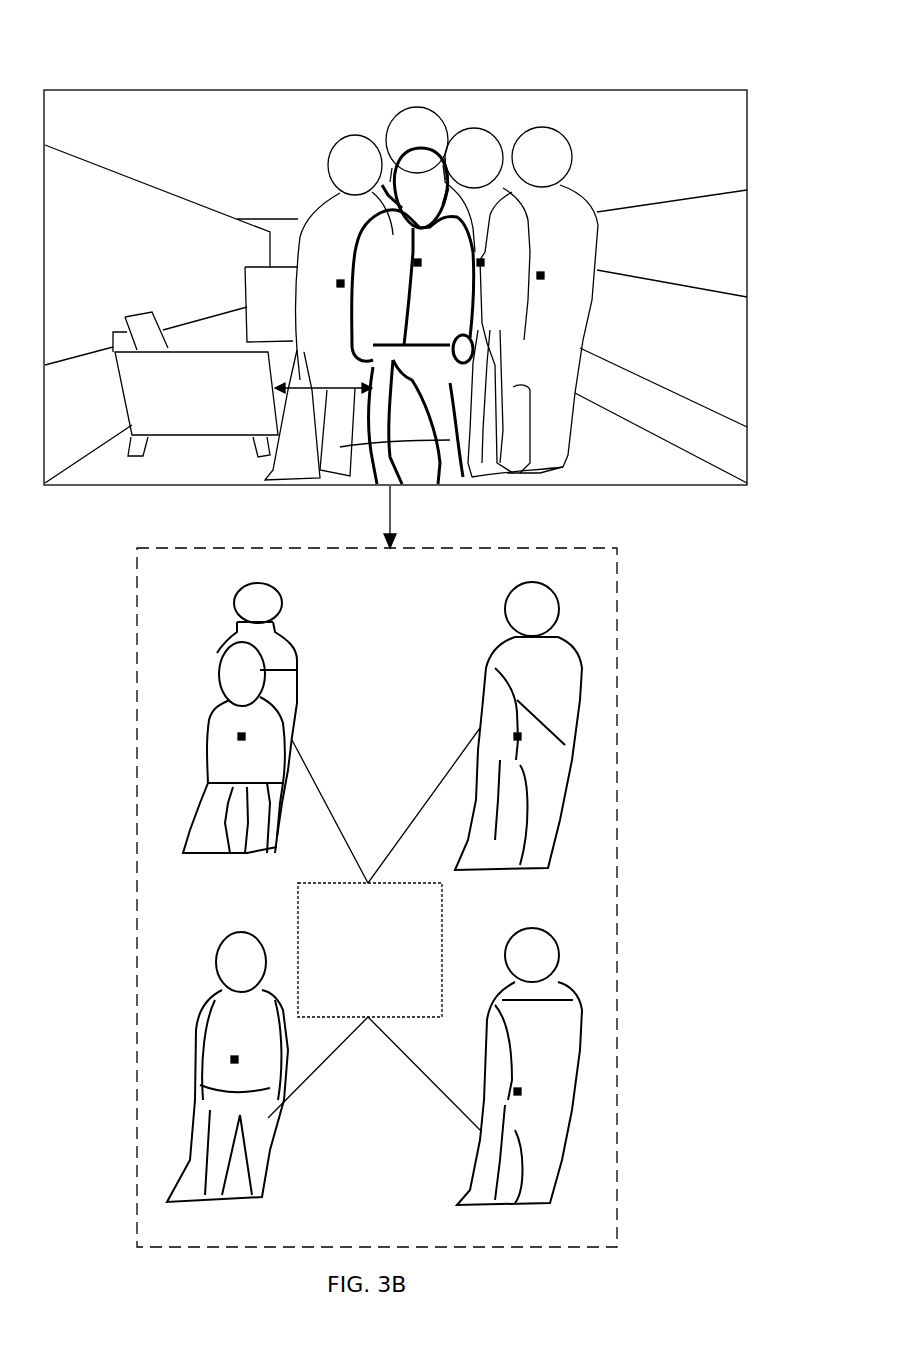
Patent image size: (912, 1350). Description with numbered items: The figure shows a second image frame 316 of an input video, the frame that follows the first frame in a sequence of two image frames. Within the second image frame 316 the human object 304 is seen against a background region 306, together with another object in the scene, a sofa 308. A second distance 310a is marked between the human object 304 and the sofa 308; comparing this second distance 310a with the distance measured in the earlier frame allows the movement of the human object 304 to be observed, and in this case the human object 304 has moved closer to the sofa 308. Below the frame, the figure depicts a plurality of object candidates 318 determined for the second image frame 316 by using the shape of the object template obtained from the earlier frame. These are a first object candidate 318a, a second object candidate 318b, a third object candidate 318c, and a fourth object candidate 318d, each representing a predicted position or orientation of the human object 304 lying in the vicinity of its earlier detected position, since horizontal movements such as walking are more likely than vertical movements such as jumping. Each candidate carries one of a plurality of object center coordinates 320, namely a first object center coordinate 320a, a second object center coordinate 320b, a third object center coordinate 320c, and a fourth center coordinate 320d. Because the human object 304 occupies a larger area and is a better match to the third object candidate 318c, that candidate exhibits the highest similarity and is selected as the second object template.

The human object 304 is at (413, 178).
The background region 306 is at (632, 113).
The sofa 308 is at (165, 403).
The second distance 310a is at (307, 390).
The second image frame 316 is at (80, 88).
The plurality of object candidates 318 is at (540, 128).
The first object candidate 318a is at (213, 668).
The second object candidate 318b is at (578, 662).
The third object candidate 318c is at (198, 1010).
The fourth object candidate 318d is at (580, 1038).
The plurality of object center coordinates 320 is at (340, 283).
The first object center coordinate 320a is at (237, 742).
The second object center coordinate 320b is at (518, 737).
The third object center coordinate 320c is at (235, 1060).
The fourth center coordinate 320d is at (518, 1092).